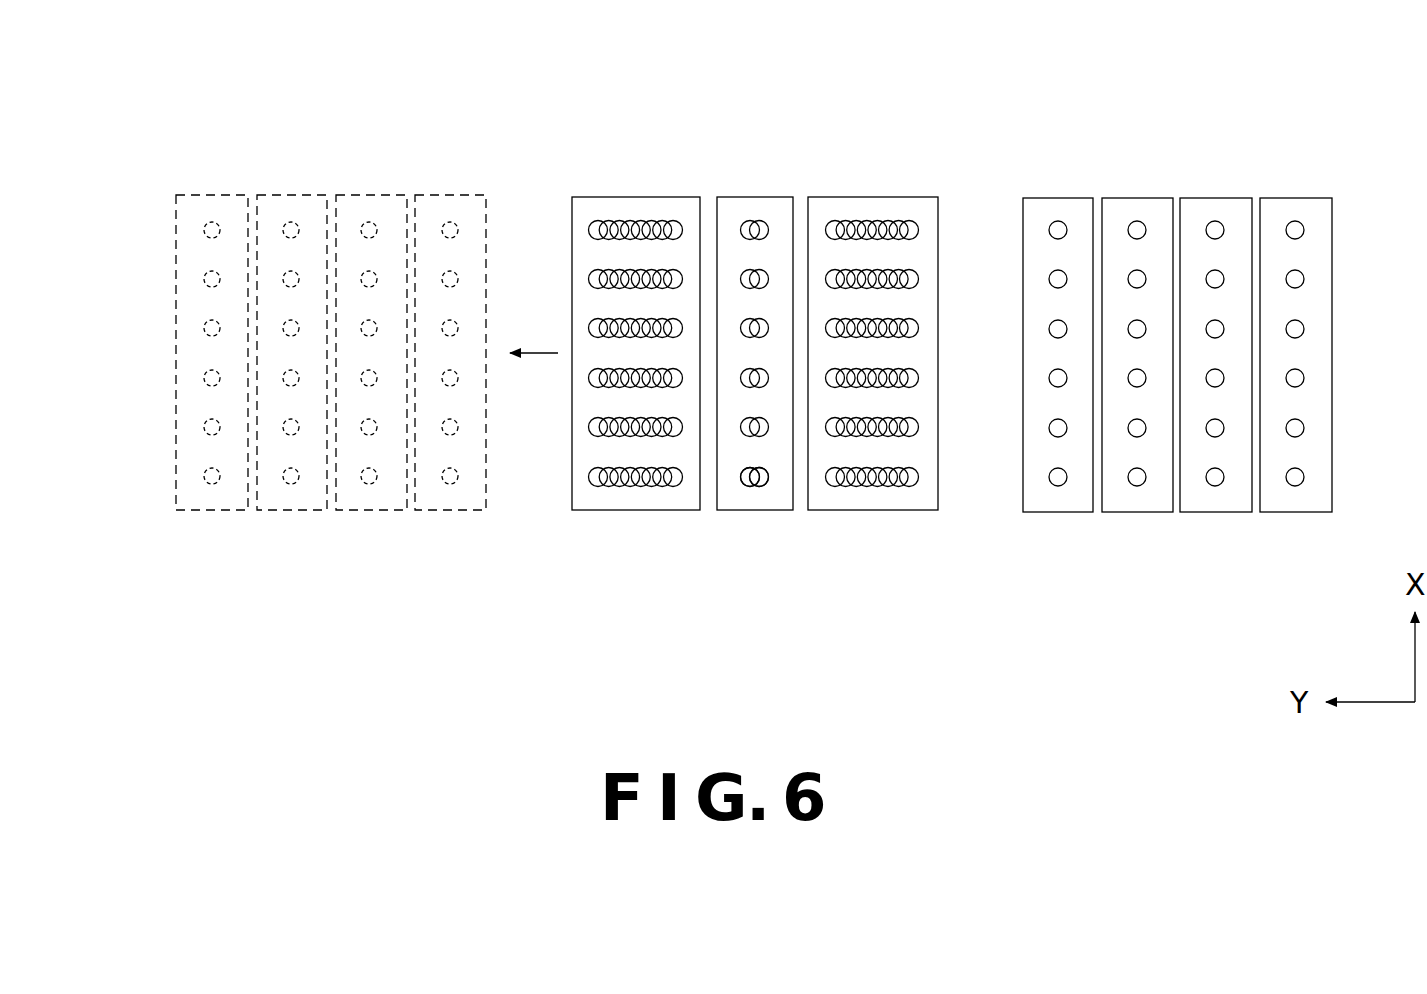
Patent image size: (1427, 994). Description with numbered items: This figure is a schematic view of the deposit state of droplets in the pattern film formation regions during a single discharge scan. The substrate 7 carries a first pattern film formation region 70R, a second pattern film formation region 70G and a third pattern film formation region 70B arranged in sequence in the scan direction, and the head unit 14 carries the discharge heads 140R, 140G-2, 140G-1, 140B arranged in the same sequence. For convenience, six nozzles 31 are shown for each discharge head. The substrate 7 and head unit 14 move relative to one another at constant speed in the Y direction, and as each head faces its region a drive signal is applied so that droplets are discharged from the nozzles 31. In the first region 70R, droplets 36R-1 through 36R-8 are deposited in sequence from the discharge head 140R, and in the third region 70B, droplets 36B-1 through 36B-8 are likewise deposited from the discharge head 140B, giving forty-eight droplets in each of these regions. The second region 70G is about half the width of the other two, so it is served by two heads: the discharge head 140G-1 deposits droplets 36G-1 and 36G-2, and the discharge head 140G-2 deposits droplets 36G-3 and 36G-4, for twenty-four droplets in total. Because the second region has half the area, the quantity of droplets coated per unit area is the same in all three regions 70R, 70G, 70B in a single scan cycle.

The substrate 7 is at (828, 102).
The head unit 14 is at (413, 98).
The nozzle 31 is at (204, 230).
The first pattern film formation region 70R is at (635, 210).
The second pattern film formation region 70G is at (755, 210).
The third pattern film formation region 70B is at (870, 210).
The droplet 36R-1 is at (593, 487).
The droplet 36R-8 is at (673, 487).
The droplet 36G-1 is at (747, 484).
The droplet 36G-2 is at (760, 485).
The droplet 36G-3 is at (750, 486).
The droplet 36G-4 is at (763, 486).
The droplet 36B-1 is at (832, 487).
The droplet 36B-8 is at (908, 487).
The discharge head 140R is at (192, 200).
The discharge head 140G-2 is at (278, 205).
The discharge head 140G-1 is at (377, 205).
The discharge head 140B is at (473, 200).